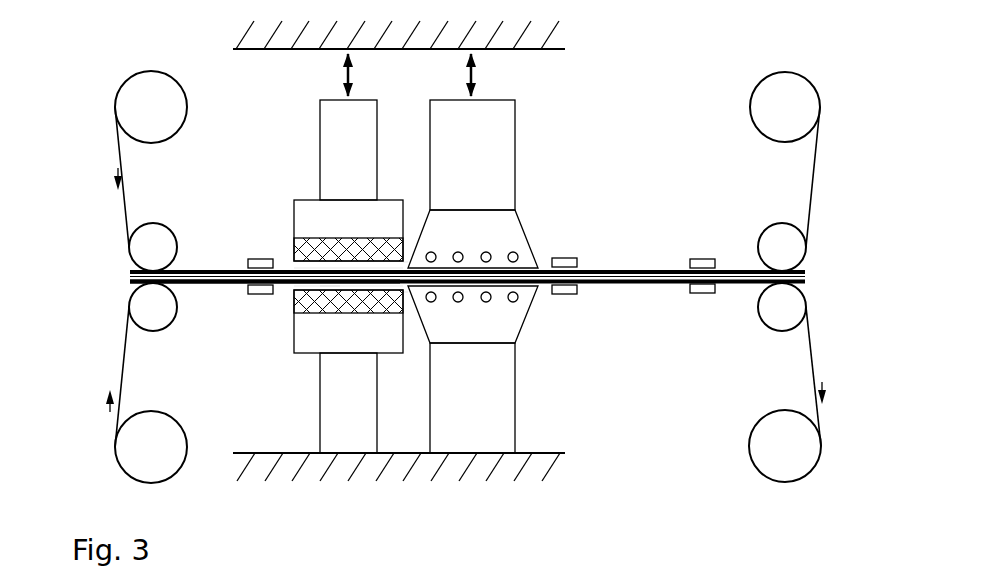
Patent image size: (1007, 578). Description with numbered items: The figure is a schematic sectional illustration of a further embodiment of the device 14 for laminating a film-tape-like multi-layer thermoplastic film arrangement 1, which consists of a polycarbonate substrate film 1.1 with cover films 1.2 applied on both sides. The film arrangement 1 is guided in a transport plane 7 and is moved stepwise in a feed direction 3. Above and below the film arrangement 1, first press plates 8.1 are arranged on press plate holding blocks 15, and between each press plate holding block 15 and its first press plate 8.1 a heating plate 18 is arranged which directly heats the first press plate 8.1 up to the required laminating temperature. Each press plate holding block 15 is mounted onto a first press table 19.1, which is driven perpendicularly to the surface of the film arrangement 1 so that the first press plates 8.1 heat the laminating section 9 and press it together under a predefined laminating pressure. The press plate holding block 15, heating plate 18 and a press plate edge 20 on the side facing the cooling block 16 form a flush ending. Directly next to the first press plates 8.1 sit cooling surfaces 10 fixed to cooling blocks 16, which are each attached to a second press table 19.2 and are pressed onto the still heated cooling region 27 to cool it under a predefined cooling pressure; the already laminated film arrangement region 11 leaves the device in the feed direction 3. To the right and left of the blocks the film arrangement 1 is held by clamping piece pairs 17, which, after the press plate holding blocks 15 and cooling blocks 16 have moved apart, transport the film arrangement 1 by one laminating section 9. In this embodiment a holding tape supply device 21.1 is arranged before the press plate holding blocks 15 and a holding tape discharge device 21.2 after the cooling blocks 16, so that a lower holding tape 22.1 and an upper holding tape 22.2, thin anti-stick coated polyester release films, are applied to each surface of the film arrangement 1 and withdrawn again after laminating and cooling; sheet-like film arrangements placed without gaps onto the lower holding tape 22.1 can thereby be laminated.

The film arrangement 1 is at (130, 275).
The substrate film 1.1 is at (130, 276).
The cover films 1.2 is at (130, 280).
The feed direction 3 is at (812, 277).
The transport plane 7 is at (817, 247).
The first press plate 8.1 is at (315, 270).
The laminating section 9 is at (330, 286).
The cooling surface 10 is at (495, 268).
The laminated film arrangement region 11 is at (608, 269).
The device for laminating 14 is at (692, 42).
The press plate holding block 15 is at (333, 222).
The cooling block 16 is at (472, 227).
The clamping piece pairs 17 is at (703, 263).
The heating plate 18 is at (342, 250).
The first press table 19.1 is at (347, 132).
The second press table 19.2 is at (472, 132).
The press plate edge 20 is at (407, 267).
The holding tape supply device 21.1 is at (112, 320).
The holding tape discharge device 21.2 is at (827, 320).
The lower holding tape 22.1 is at (123, 378).
The upper holding tape 22.2 is at (127, 180).
The cooling region 27 is at (520, 267).